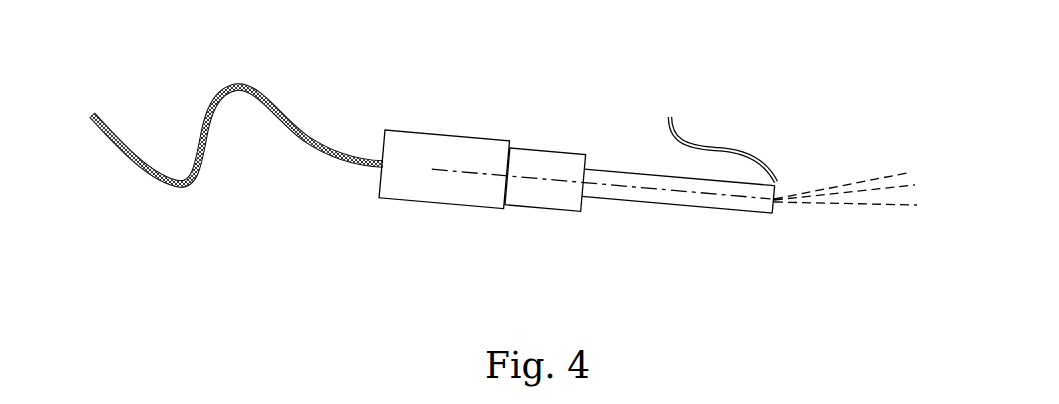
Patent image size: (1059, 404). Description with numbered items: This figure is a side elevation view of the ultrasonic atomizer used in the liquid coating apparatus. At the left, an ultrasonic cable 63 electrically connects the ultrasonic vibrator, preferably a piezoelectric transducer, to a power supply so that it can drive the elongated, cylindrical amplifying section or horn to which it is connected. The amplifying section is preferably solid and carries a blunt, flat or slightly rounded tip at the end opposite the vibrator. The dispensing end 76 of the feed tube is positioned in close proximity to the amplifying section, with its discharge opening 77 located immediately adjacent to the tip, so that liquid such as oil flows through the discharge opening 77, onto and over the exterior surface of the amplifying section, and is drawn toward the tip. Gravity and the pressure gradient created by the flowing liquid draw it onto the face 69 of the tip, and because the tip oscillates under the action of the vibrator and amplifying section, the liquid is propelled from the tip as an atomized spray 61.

The atomized spray 61 is at (855, 227).
The ultrasonic cable 63 is at (285, 110).
The face 69 is at (778, 197).
The dispensing end 76 is at (670, 95).
The discharge opening 77 is at (790, 173).